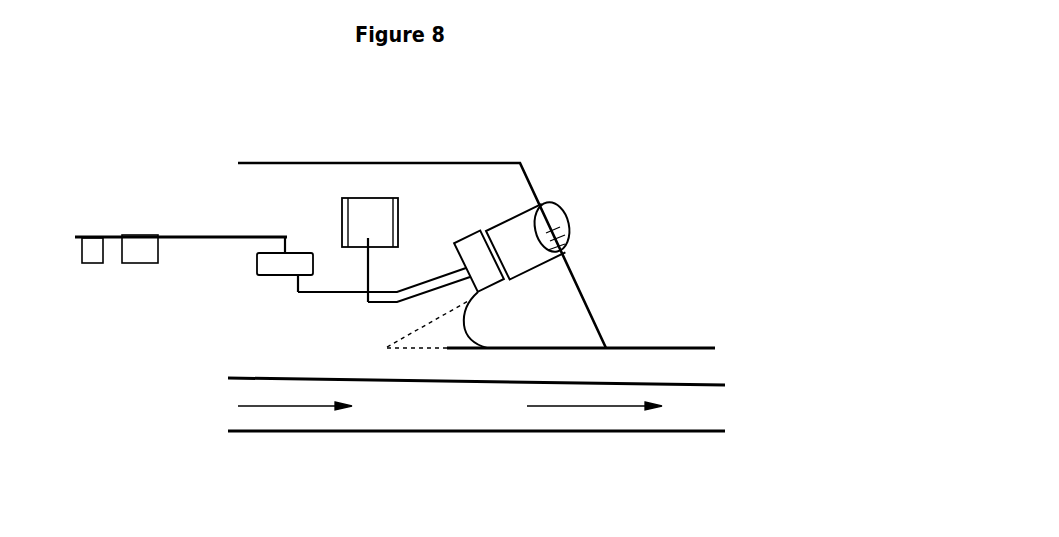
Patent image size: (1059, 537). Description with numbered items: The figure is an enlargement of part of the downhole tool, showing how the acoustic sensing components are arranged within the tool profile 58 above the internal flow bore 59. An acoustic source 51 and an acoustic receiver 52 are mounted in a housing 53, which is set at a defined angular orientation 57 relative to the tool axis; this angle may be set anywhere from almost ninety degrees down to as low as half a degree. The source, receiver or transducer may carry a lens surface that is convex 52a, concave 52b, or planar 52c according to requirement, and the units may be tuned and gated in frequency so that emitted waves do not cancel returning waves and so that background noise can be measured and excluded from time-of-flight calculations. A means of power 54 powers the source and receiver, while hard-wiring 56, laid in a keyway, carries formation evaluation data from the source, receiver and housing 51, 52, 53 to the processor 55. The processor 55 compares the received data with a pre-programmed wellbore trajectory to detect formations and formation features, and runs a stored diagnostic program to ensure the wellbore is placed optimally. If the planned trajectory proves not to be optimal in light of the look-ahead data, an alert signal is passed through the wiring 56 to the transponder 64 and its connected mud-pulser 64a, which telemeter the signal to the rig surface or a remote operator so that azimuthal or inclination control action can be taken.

The acoustic source 51 is at (540, 252).
The acoustic receiver 52 is at (545, 223).
The convex lens surface 52a is at (553, 230).
The concave lens surface 52b is at (558, 238).
The planar lens surface 52c is at (557, 247).
The housing 53 is at (521, 212).
The means of power 54 is at (378, 208).
The processor 55 is at (284, 262).
The hard-wiring 56 is at (418, 282).
The angular orientation 57 is at (482, 327).
The profile 58 is at (530, 183).
The internal flow bore 59 is at (485, 407).
The transponder 64 is at (140, 243).
The mud-pulser 64a is at (93, 243).